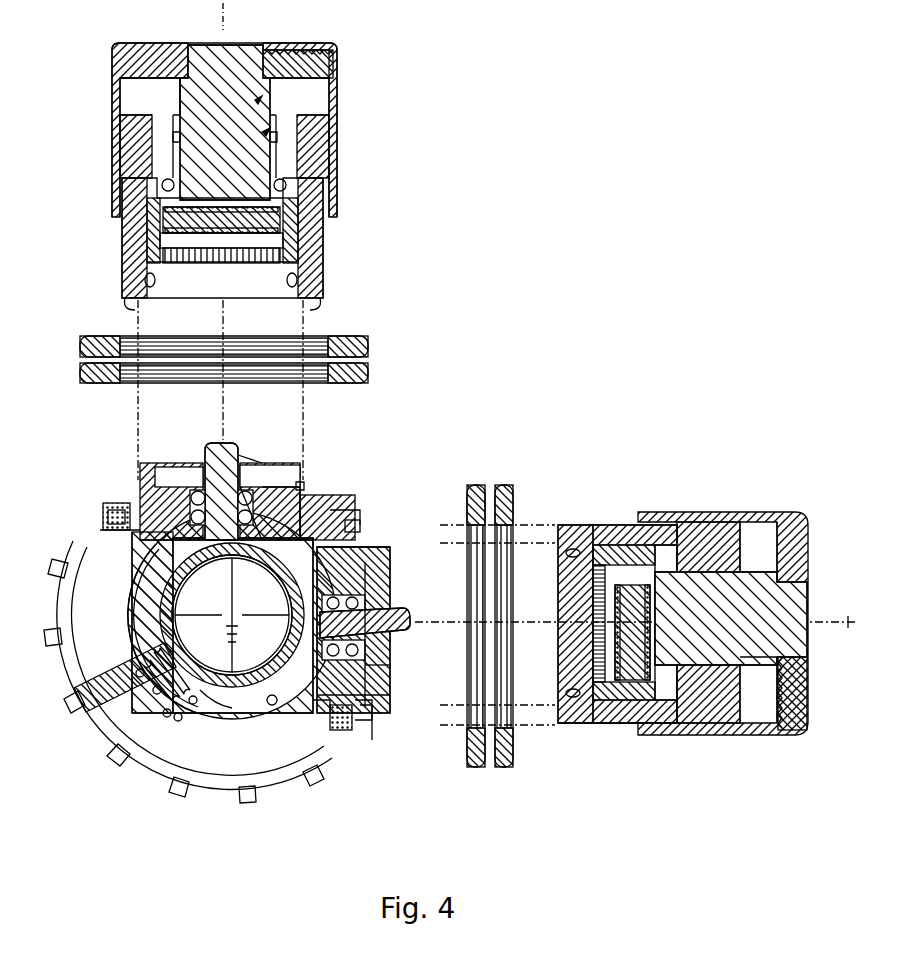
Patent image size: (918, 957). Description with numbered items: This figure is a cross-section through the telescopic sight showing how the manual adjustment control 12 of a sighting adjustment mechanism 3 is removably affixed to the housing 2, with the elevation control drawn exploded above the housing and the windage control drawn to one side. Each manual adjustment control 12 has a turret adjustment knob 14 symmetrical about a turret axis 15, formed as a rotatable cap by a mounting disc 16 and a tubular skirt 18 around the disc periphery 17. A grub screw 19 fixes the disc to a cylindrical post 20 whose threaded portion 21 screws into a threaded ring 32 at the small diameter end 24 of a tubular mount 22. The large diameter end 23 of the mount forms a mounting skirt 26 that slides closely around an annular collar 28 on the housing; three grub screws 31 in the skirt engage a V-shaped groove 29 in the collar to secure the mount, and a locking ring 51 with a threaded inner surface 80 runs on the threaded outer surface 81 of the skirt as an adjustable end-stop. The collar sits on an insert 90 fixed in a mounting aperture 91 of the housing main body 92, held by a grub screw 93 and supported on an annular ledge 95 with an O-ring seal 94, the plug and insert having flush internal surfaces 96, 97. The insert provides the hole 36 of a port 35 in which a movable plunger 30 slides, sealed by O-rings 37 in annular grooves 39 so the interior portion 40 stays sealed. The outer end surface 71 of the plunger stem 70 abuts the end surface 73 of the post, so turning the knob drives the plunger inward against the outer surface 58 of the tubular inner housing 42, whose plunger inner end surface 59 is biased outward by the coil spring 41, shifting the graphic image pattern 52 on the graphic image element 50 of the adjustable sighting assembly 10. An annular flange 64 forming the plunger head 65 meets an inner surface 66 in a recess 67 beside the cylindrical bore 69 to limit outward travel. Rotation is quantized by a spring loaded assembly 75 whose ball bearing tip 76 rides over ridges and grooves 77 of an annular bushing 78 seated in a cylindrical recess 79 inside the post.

The housing 2 is at (165, 795).
The sighting adjustment mechanism 3 is at (190, 445).
The adjustable sighting assembly 10 is at (282, 720).
The manual adjustment control 12 is at (345, 125).
The turret adjustment knob 14 is at (107, 70).
The turret axis 15 is at (228, 22).
The mounting disc 16 is at (800, 520).
The periphery 17 is at (805, 736).
The tubular skirt 18 is at (740, 736).
The grub screw 19 is at (330, 62).
The cylindrical post 20 is at (280, 97).
The threaded portion 21 is at (118, 100).
The tubular mount 22 is at (300, 152).
The large diameter end 23 is at (575, 548).
The small diameter end 24 is at (725, 548).
The mounting skirt 26 is at (592, 712).
The annular collar 28 is at (145, 475).
The V-shaped groove 29 is at (270, 495).
The movable plunger 30 is at (243, 455).
The grub screws 31 is at (130, 305).
The threaded ring 32 is at (180, 137).
The port 35 is at (245, 480).
The hole 36 is at (385, 575).
The O-rings 37 is at (390, 628).
The annular grooves 39 is at (380, 648).
The interior portion 40 is at (156, 640).
The coil spring 41 is at (110, 750).
The tubular inner housing 42 is at (240, 700).
The graphic image element 50 is at (195, 790).
The locking ring 51 is at (370, 375).
The graphic image pattern 52 is at (221, 610).
The outer surface 58 is at (235, 715).
The plunger inner end surface 59 is at (140, 540).
The annular flange 64 is at (115, 525).
The plunger head 65 is at (285, 500).
The inner surface 66 is at (200, 500).
The recess 67 is at (320, 505).
The cylindrical bore 69 is at (290, 740).
The plunger stem 70 is at (205, 465).
The outer end surface 71 is at (208, 455).
The end surface 73 is at (235, 300).
The spring loaded assembly 75 is at (160, 228).
The ball bearing tip 76 is at (295, 225).
The ridges and grooves 77 is at (260, 255).
The annular bushing 78 is at (160, 243).
The cylindrical recess 79 is at (300, 190).
The threaded inner surface 80 is at (320, 338).
The threaded outer surface 81 is at (330, 275).
The insert 90 is at (250, 475).
The mounting aperture 91 is at (300, 497).
The main body 92 is at (330, 517).
The grub screw 93 is at (108, 500).
The O-ring seal 94 is at (345, 525).
The annular ledge 95 is at (108, 520).
The internal surface 96 is at (380, 668).
The internal surface 97 is at (380, 700).